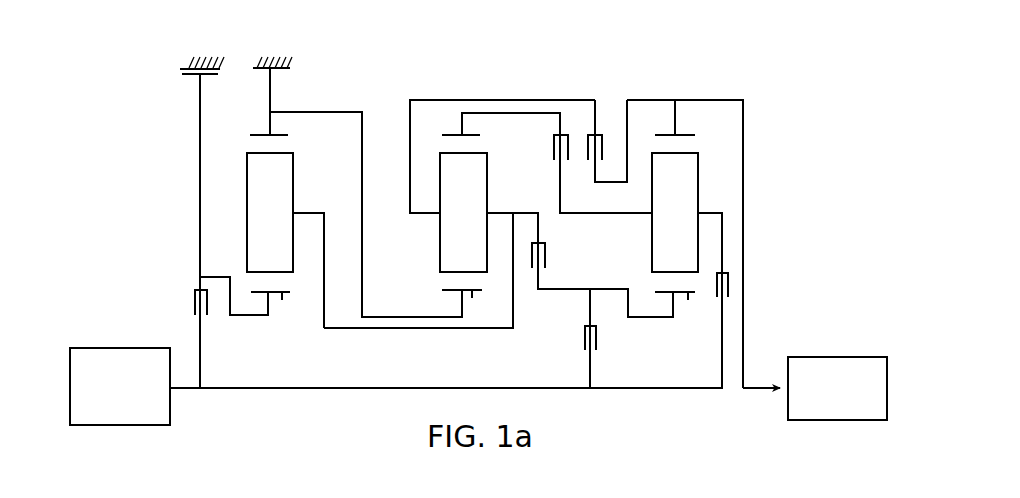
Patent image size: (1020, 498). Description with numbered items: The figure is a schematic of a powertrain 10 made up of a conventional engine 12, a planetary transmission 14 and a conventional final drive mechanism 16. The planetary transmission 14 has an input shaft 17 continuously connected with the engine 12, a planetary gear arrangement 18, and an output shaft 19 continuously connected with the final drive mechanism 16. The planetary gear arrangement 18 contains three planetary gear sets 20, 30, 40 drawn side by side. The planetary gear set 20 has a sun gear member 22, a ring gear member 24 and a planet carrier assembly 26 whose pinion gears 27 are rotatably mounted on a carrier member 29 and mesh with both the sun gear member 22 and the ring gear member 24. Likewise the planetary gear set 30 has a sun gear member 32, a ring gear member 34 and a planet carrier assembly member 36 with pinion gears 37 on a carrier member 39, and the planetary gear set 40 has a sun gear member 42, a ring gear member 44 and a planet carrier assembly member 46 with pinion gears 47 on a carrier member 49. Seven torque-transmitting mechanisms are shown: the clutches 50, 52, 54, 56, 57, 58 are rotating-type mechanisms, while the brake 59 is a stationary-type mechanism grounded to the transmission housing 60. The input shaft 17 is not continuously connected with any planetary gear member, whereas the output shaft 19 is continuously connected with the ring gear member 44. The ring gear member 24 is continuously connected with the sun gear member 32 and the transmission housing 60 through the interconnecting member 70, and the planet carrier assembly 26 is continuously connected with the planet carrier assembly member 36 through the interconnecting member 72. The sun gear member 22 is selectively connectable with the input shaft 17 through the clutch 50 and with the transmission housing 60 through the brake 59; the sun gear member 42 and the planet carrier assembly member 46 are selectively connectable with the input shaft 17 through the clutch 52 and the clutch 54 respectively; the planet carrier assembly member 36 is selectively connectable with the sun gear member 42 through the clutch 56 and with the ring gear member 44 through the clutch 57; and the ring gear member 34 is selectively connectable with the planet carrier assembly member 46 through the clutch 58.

The powertrain 10 is at (168, 158).
The engine 12 is at (136, 333).
The planetary transmission 14 is at (383, 78).
The final drive mechanism 16 is at (822, 340).
The input shaft 17 is at (187, 392).
The planetary gear arrangement 18 is at (486, 78).
The output shaft 19 is at (752, 392).
The planetary gear set 20 is at (260, 297).
The sun gear member 22 is at (283, 298).
The ring gear member 24 is at (258, 133).
The planet carrier assembly 26 is at (302, 206).
The pinion gears 27 is at (270, 212).
The carrier member 29 is at (312, 211).
The planetary gear set 30 is at (452, 296).
The sun gear member 32 is at (473, 298).
The ring gear member 34 is at (455, 130).
The planet carrier assembly member 36 is at (436, 223).
The pinion gears 37 is at (463, 212).
The carrier member 39 is at (423, 217).
The planetary gear set 40 is at (668, 297).
The sun gear member 42 is at (689, 298).
The ring gear member 44 is at (667, 132).
The planet carrier assembly member 46 is at (704, 209).
The pinion gears 47 is at (675, 212).
The carrier member 49 is at (710, 210).
The clutch 50 is at (191, 287).
The clutch 52 is at (600, 363).
The clutch 54 is at (734, 282).
The clutch 56 is at (548, 267).
The clutch 57 is at (587, 127).
The clutch 58 is at (553, 127).
The brake 59 is at (180, 65).
The transmission housing 60 is at (183, 57).
The interconnecting member 70 is at (328, 110).
The interconnecting member 72 is at (363, 330).